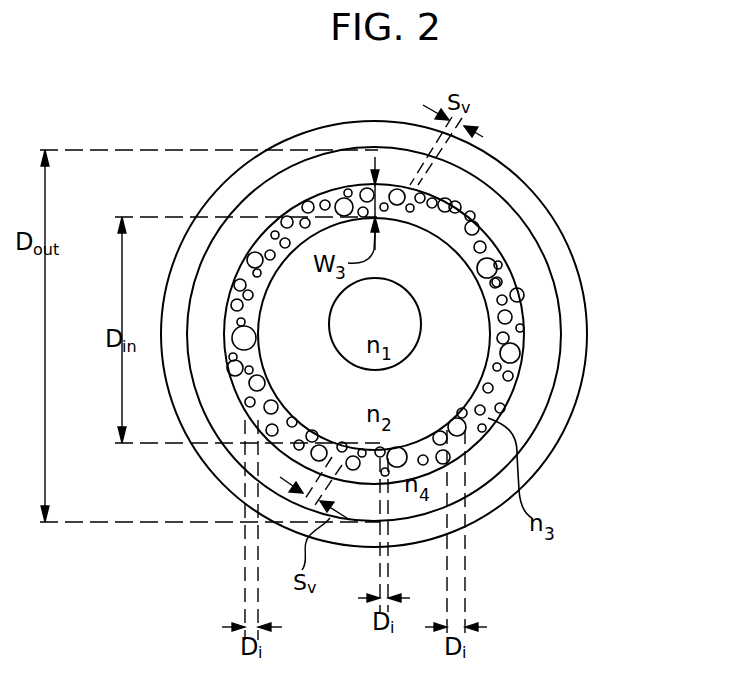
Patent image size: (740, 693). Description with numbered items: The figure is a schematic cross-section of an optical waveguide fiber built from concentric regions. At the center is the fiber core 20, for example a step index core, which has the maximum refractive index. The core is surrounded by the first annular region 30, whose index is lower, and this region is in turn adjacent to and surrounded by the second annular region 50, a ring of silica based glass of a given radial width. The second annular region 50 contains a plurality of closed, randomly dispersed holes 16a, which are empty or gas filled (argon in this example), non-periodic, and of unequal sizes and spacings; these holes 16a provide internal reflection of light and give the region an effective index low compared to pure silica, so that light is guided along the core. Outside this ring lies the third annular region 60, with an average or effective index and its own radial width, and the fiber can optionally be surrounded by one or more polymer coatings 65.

The holes 16a is at (493, 225).
The fiber core 20 is at (382, 312).
The first annular region 30 is at (432, 358).
The second annular region 50 is at (495, 392).
The third annular region 60 is at (517, 413).
The polymer coatings 65 is at (542, 452).